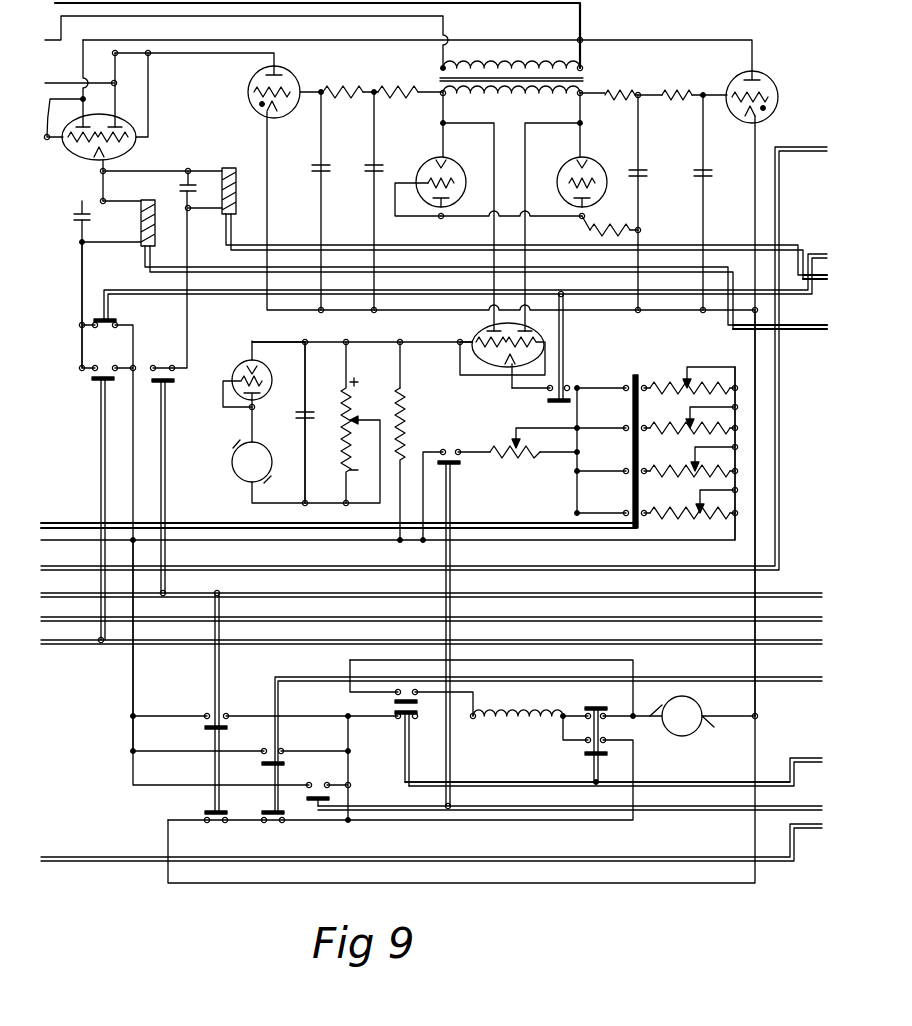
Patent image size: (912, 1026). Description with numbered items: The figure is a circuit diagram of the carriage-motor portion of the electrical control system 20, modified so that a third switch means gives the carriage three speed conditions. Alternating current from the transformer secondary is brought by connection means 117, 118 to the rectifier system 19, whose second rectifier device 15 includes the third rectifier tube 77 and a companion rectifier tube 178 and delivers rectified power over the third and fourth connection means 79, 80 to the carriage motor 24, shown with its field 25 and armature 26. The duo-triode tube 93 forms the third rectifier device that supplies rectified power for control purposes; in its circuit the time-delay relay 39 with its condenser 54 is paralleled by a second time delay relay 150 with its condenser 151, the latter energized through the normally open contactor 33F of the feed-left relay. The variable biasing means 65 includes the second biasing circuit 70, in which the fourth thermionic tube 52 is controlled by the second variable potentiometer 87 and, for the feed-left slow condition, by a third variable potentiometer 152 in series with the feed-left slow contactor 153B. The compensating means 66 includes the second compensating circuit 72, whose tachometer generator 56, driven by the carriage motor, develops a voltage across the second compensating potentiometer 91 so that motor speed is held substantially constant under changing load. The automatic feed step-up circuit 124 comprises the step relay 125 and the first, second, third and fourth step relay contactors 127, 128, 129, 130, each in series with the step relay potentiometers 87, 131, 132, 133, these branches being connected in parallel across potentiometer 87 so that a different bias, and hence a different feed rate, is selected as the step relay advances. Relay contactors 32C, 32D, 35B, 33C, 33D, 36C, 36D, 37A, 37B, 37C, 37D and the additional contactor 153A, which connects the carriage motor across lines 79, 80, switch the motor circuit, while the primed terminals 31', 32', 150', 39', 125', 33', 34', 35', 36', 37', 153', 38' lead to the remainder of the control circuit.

The connection means 117 is at (74, 84).
The connection means 118 is at (349, 57).
The duo-triode tube 93 is at (113, 120).
The rectifier system 19 is at (80, 187).
The condenser 54 is at (94, 222).
The time-delay relay 39 is at (465, 264).
The condenser 151 is at (181, 190).
The second time delay relay 150 is at (524, 212).
The third rectifier tube 77 is at (293, 80).
The second rectifier device 15 is at (530, 194).
The electron tube 178 is at (771, 89).
The conductor terminal 31' is at (439, 350).
The conductor terminal 32' is at (466, 275).
The conductor terminal 150' is at (813, 298).
The conductor terminal 39' is at (780, 338).
The cycle relay contactor 32D is at (106, 322).
The traverse-out relay contactor 35B is at (99, 381).
The feed-left relay normally open contactor 33F is at (168, 382).
The electrical control system 20 is at (78, 452).
The fourth thermionic tube 52 is at (481, 335).
The variable biasing means 65 is at (463, 409).
The cycle relay contactor 32C is at (556, 404).
The compensating means 66 is at (208, 502).
The second tachometer generator 56 is at (249, 455).
The second compensating circuit 72 is at (330, 490).
The second compensating potentiometer 91 is at (351, 411).
The feed-left slow relay contactor 153B is at (455, 464).
The third variable potentiometer 152 is at (512, 456).
The second biasing circuit 70 is at (522, 506).
The step relay 125 is at (626, 440).
The automatic feed step-up circuit 124 is at (736, 362).
The fourth step relay contactor 130 is at (622, 390).
The third step relay contactor 129 is at (622, 430).
The second step relay contactor 128 is at (622, 473).
The first step relay contactor 127 is at (622, 515).
The fourth step relay potentiometer 133 is at (680, 396).
The third step relay potentiometer 132 is at (680, 437).
The second step relay potentiometer 131 is at (680, 479).
The second variable potentiometer 87 is at (688, 519).
The third connection means 79 is at (760, 452).
The conductor terminal 125' is at (338, 517).
The conductor terminal 33' is at (433, 586).
The conductor terminal 34' is at (433, 610).
The conductor terminal 35' is at (433, 634).
The conductor terminal 36' is at (550, 736).
The conductor terminal 37' is at (615, 763).
The conductor terminal 153' is at (570, 803).
The conductor terminal 38' is at (433, 842).
The fourth connection means 80 is at (134, 683).
The feed-left relay contactor 33C is at (210, 729).
The traverse-right relay contactor 36C is at (285, 764).
The feed-left relay contactor 33D is at (207, 811).
The traverse-right relay contactor 36D is at (277, 822).
The feed-left slow relay contactor 153A is at (346, 791).
The longitudinal-brake relay contactor 37A is at (418, 702).
The longitudinal-brake relay contactor 37C is at (394, 711).
The field 25 is at (528, 712).
The longitudinal-brake relay contactor 37D is at (596, 707).
The longitudinal-brake relay contactor 37B is at (586, 754).
The carriage motor 24 is at (641, 740).
The armature 26 is at (699, 706).